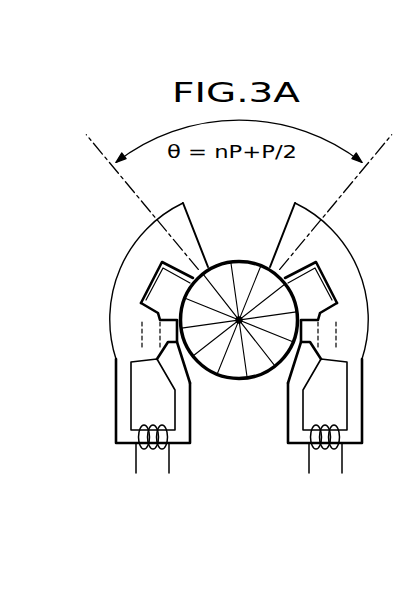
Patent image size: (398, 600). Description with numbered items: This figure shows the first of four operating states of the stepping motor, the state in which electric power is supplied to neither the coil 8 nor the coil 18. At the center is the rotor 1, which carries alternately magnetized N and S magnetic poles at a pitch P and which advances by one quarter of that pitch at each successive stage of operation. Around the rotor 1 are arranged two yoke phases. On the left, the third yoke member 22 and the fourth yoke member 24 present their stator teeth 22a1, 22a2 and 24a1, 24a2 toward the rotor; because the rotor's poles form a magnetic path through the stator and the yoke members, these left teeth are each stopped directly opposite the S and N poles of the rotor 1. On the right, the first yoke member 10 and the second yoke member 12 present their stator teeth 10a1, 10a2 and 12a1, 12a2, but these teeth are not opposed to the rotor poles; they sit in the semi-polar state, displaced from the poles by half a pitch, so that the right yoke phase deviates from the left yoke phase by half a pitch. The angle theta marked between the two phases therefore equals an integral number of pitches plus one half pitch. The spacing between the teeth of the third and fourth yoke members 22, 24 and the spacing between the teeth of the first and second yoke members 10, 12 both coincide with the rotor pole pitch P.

The rotor 1 is at (249, 383).
The coil 8 is at (325, 463).
The coil 18 is at (152, 463).
The first yoke member 10 is at (347, 263).
The stator tooth 10a1 is at (334, 298).
The stator tooth 10a2 is at (285, 232).
The second yoke member 12 is at (309, 373).
The stator tooth 12a1 is at (289, 378).
The stator tooth 12a2 is at (334, 262).
The third yoke member 22 is at (157, 238).
The stator tooth 22a1 is at (160, 321).
The stator tooth 22a2 is at (190, 245).
The fourth yoke member 24 is at (173, 368).
The stator tooth 24a1 is at (156, 360).
The stator tooth 24a2 is at (141, 296).